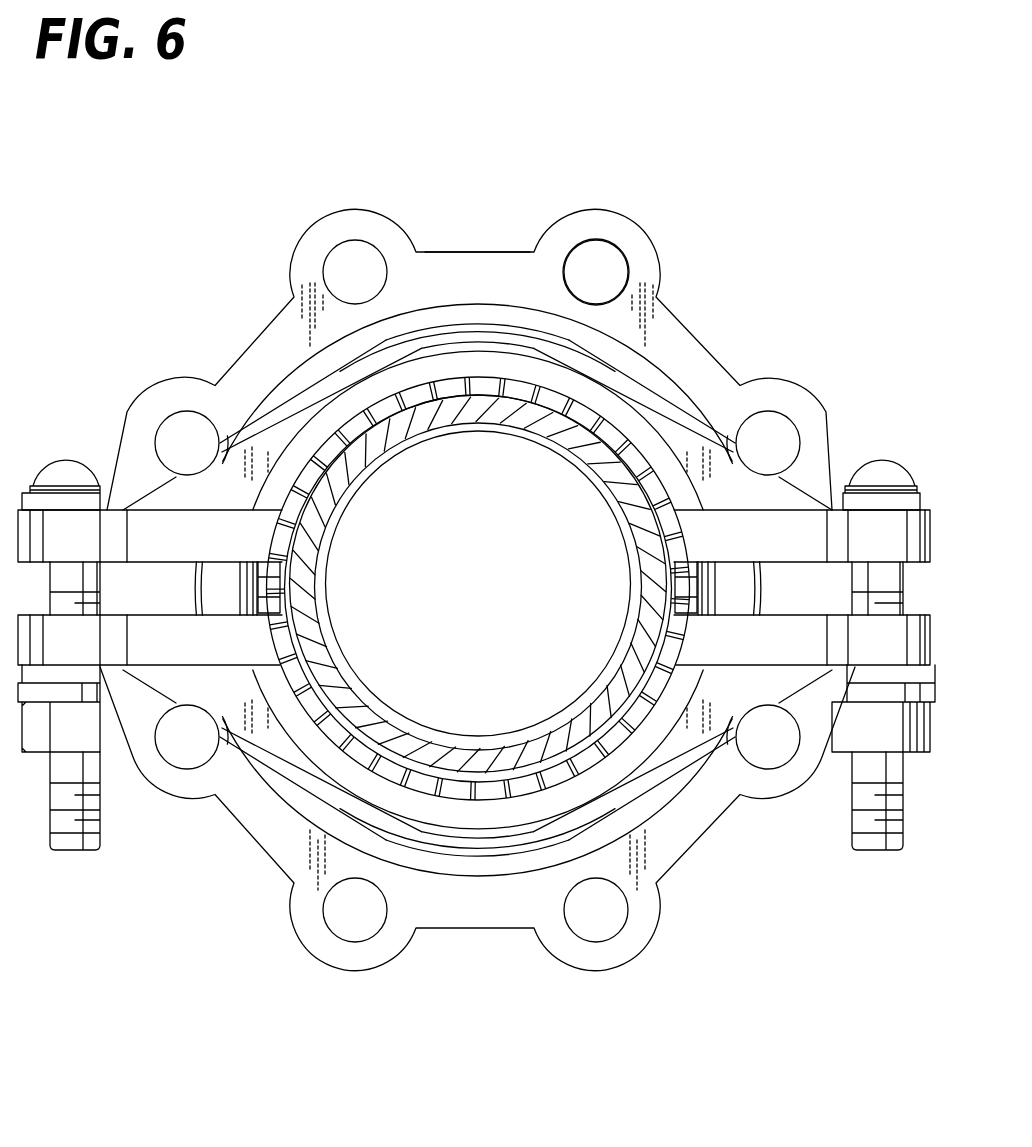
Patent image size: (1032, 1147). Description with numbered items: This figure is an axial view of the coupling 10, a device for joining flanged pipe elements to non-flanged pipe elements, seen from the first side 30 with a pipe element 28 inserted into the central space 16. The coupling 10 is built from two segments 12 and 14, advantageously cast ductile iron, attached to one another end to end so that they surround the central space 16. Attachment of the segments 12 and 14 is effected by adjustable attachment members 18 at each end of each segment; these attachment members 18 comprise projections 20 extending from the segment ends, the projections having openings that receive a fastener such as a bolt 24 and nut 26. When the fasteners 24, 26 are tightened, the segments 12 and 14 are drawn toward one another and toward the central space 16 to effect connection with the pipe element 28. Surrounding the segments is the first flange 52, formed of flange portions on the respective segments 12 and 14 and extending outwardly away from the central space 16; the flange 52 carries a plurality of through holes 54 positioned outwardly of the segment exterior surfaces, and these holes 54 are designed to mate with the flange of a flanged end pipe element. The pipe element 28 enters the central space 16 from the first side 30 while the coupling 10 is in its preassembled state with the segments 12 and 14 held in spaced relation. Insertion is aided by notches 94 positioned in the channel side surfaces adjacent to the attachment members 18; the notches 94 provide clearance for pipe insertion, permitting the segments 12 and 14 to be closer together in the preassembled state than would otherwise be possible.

The coupling 10 is at (664, 186).
The segment 12 is at (463, 322).
The segment 14 is at (443, 808).
The central space 16 is at (528, 603).
The attachment members 18 is at (912, 637).
The projections 20 is at (910, 530).
The bolt 24 is at (878, 458).
The nut 26 is at (868, 744).
The pipe element 28 is at (340, 690).
The first side 30 is at (606, 415).
The first flange 52 is at (505, 245).
The through holes 54 is at (628, 263).
The notches 94 is at (290, 617).